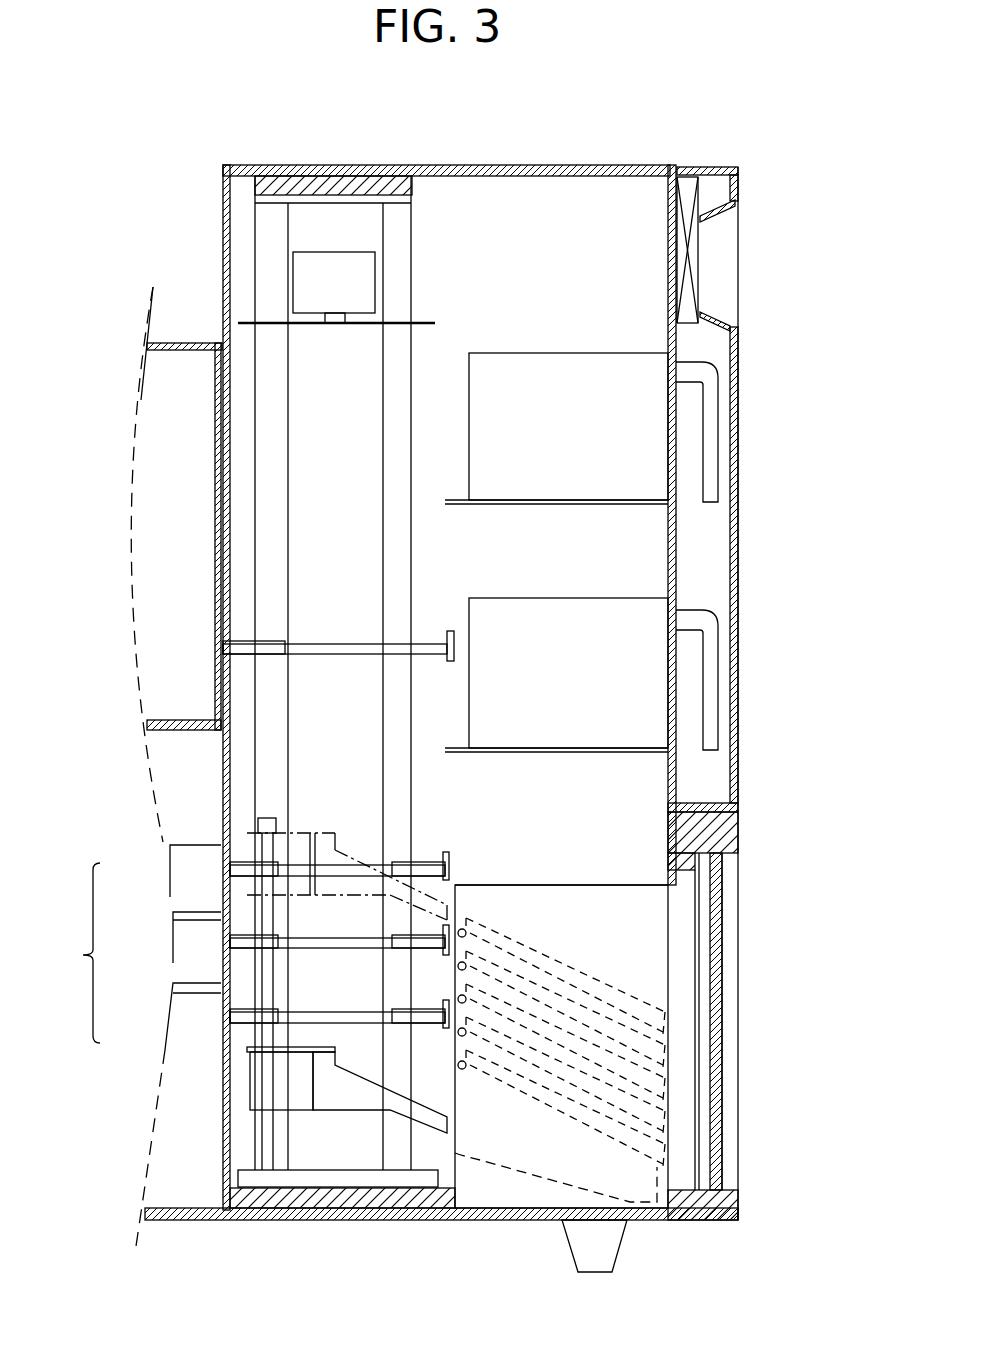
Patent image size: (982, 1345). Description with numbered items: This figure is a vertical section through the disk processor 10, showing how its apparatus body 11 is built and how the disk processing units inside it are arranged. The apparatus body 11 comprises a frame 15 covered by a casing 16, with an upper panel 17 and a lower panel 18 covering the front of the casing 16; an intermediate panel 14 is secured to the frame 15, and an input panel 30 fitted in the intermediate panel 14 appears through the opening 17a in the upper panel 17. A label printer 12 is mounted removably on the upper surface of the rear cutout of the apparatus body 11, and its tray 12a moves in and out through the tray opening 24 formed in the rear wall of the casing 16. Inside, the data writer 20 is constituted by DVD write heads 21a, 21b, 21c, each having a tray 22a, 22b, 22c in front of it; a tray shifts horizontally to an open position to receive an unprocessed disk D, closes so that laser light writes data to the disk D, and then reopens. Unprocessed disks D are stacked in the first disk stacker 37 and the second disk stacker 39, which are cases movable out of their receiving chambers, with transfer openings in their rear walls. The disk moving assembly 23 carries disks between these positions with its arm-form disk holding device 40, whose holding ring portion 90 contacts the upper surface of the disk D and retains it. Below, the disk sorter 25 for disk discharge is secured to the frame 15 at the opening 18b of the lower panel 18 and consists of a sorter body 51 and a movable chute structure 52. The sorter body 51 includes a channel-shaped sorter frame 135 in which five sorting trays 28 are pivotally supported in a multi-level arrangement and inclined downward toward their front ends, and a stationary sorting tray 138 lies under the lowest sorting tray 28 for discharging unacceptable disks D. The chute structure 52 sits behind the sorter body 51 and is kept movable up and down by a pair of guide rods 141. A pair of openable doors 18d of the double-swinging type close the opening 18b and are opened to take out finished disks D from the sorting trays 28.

The disk processor 10 is at (470, 160).
The apparatus body 11 is at (255, 163).
The label printer 12 is at (190, 356).
The tray 12a is at (430, 648).
The intermediate panel 14 is at (668, 541).
The frame 15 is at (400, 180).
The casing 16 is at (316, 172).
The upper panel 17 is at (735, 565).
The opening 17a is at (725, 247).
The lower panel 18 is at (715, 835).
The opening 18b is at (738, 912).
The openable doors 18d is at (715, 998).
The data writer 20 is at (71, 953).
The DVD write head 21a is at (188, 886).
The DVD write head 21b is at (188, 955).
The DVD write head 21c is at (188, 1028).
The tray 22a is at (424, 866).
The tray 22b is at (430, 950).
The tray 22c is at (430, 1026).
The disk moving assembly 23 is at (425, 283).
The tray opening 24 is at (270, 643).
The disk sorter 25 is at (560, 878).
The sorting trays 28 is at (597, 975).
The input panel 30 is at (690, 285).
The first disk stacker 37 is at (575, 365).
The second disk stacker 39 is at (568, 612).
The disk holding device 40 is at (305, 263).
The sorter body 51 is at (521, 885).
The chute structure 52 is at (325, 835).
The holding ring portion 90 is at (335, 323).
The sorter frame 135 is at (630, 905).
The stationary sorting tray 138 is at (500, 1197).
The guide rods 141 is at (262, 818).
The disk D is at (396, 325).